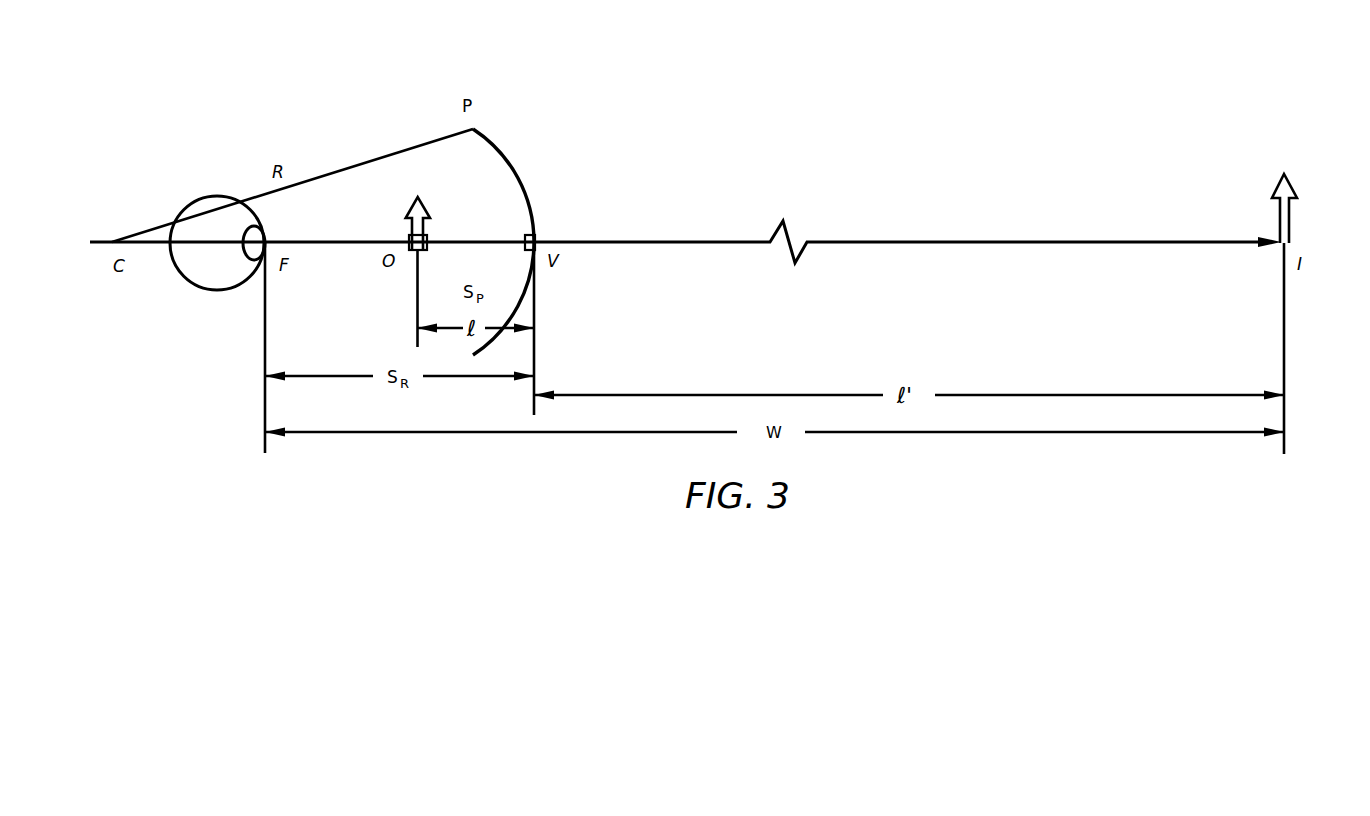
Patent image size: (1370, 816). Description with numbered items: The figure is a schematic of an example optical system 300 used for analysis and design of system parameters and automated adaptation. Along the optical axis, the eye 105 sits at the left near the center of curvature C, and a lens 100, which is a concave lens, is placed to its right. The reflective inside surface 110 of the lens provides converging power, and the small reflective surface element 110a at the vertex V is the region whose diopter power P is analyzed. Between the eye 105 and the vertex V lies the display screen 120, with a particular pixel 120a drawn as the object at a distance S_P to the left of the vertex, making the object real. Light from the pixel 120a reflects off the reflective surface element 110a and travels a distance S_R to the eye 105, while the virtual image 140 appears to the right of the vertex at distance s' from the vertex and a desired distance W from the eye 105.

The lens 100 is at (569, 209).
The eye 105 is at (217, 290).
The reflective inside surface 110 is at (500, 157).
The reflective surface element 110a is at (535, 237).
The display screen 120 is at (404, 190).
The pixel 120a is at (411, 250).
The virtual image 140 is at (1296, 243).
The optical system 300 is at (998, 105).